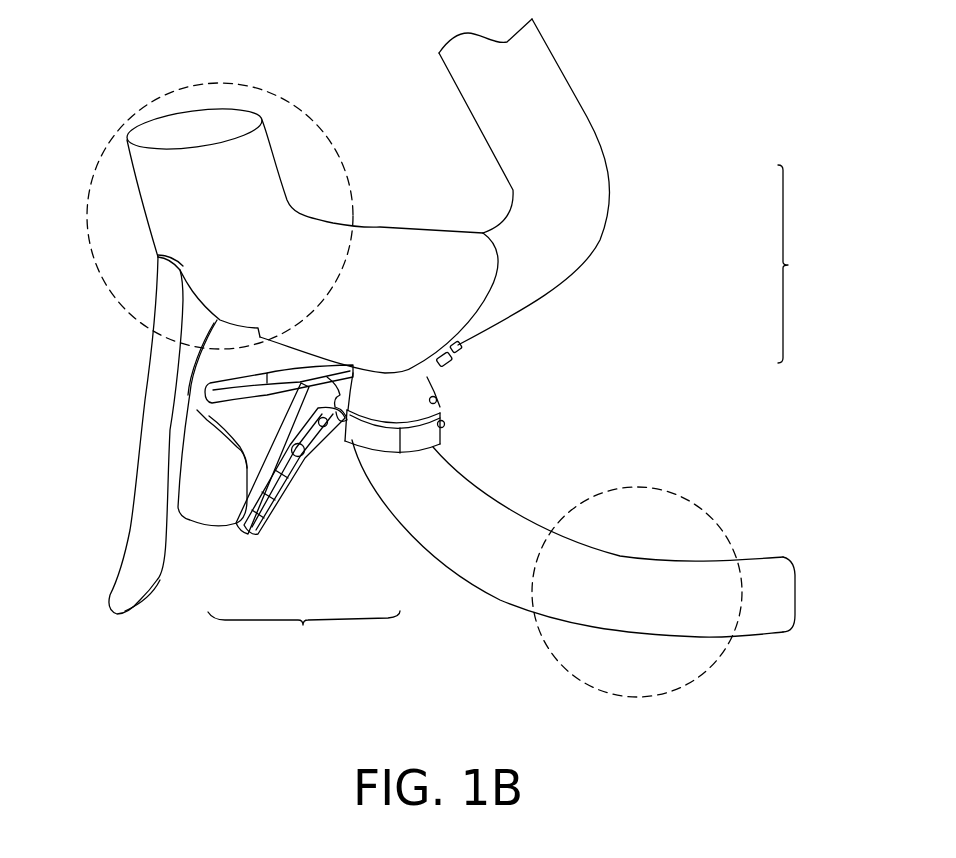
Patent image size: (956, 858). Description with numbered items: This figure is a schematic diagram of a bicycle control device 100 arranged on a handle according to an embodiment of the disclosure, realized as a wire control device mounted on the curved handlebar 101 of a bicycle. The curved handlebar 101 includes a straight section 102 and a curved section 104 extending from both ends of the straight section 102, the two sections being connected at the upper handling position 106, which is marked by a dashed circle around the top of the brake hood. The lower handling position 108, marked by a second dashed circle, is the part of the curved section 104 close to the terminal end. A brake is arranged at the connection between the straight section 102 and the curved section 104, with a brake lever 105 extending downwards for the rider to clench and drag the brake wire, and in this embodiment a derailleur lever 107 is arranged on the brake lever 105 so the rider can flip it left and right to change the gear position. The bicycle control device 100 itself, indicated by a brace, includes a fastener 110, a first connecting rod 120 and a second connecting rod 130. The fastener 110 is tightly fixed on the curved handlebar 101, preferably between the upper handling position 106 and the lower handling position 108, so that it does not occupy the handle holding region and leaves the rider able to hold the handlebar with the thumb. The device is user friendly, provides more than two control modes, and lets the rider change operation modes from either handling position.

The bicycle control device 100 is at (304, 632).
The curved handlebar 101 is at (807, 264).
The straight section 102 is at (547, 120).
The curved section 104 is at (572, 578).
The brake lever 105 is at (153, 417).
The upper handling position 106 is at (222, 84).
The derailleur lever 107 is at (217, 485).
The lower handling position 108 is at (637, 697).
The fastener 110 is at (382, 443).
The first connecting rod 120 is at (252, 392).
The second connecting rod 130 is at (280, 490).